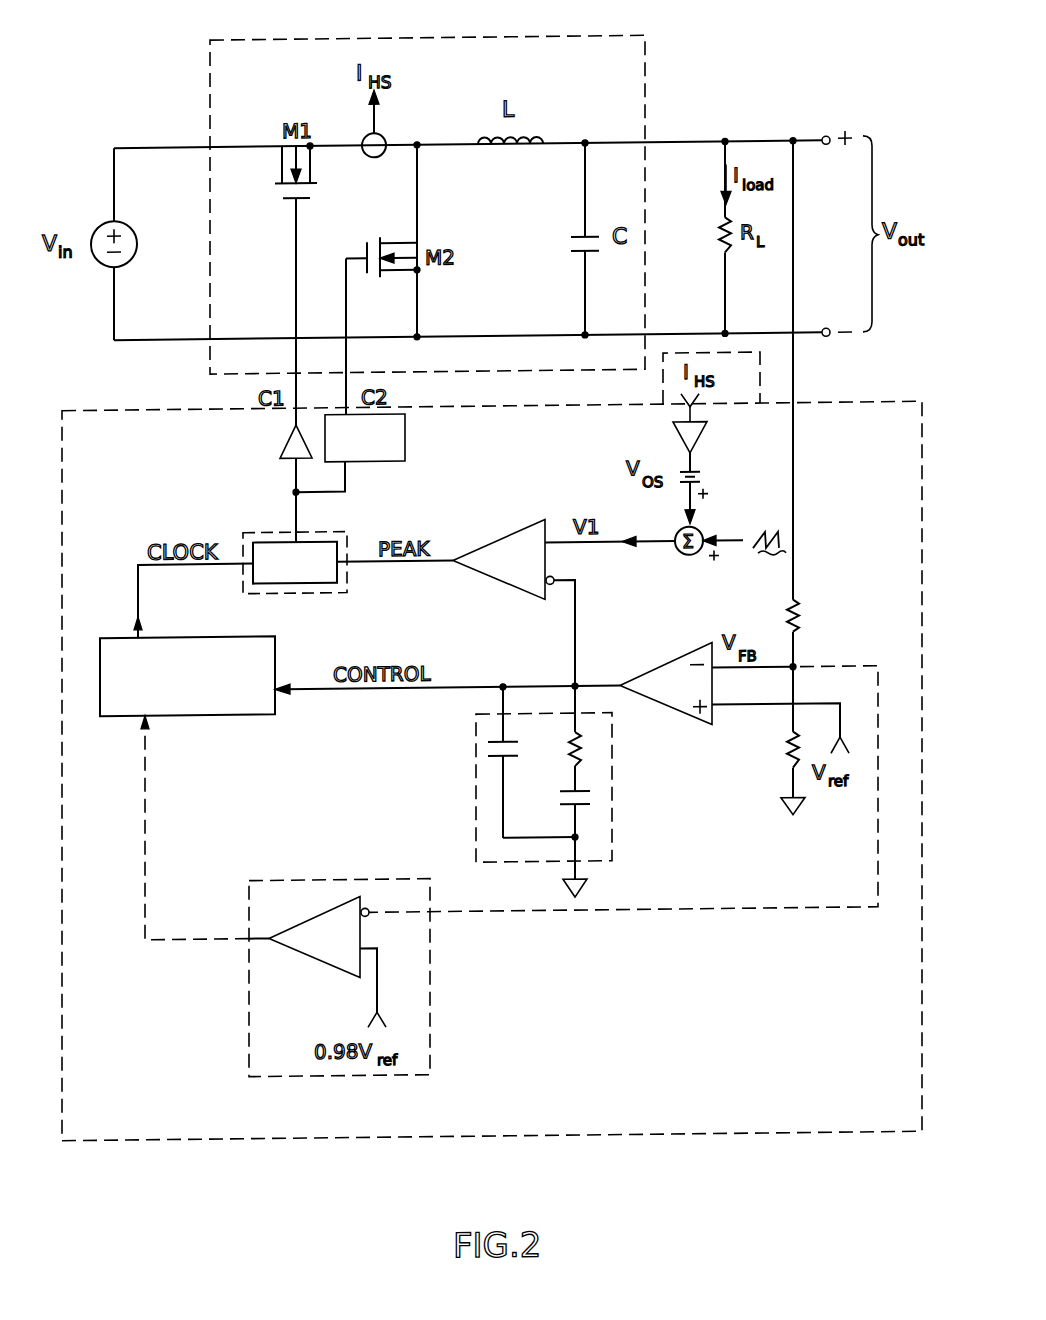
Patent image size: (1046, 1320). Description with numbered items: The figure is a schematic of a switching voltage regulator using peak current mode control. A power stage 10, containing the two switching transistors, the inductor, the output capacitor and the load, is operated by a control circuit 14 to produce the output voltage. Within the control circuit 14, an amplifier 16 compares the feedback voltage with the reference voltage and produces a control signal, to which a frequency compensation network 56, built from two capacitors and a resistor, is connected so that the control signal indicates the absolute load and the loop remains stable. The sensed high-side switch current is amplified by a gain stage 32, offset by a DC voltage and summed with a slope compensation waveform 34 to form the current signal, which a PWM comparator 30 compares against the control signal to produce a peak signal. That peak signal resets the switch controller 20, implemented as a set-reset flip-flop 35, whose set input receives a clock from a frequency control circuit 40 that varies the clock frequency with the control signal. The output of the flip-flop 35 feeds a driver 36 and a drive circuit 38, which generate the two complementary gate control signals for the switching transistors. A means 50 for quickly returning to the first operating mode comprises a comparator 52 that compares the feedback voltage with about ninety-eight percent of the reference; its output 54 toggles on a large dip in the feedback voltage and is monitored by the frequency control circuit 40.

The power stage 10 is at (275, 37).
The control circuit 14 is at (101, 407).
The amplifier 16 is at (672, 708).
The switch controller 20 is at (267, 532).
The PWM comparator 30 is at (508, 537).
The gain stage 32 is at (699, 440).
The slope compensation waveform 34 is at (766, 558).
The set-reset flip-flop 35 is at (318, 541).
The driver 36 is at (285, 440).
The drive circuit 38 is at (405, 443).
The frequency control circuit 40 is at (245, 713).
The means of quickly triggering the regulator back into Mode I 50 is at (345, 879).
The comparator 52 is at (313, 958).
The output of comparator 54 is at (145, 877).
The frequency compensation network 56 is at (476, 805).